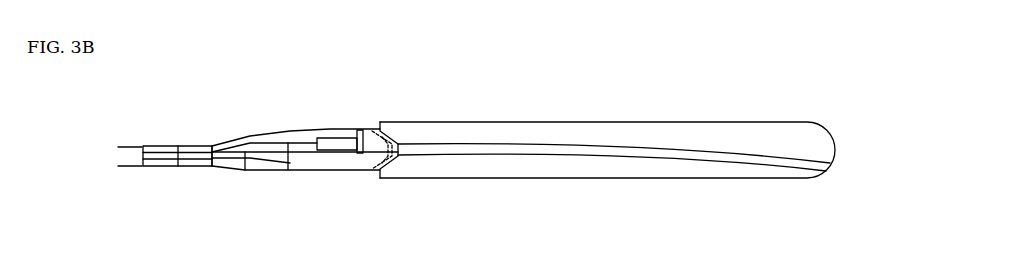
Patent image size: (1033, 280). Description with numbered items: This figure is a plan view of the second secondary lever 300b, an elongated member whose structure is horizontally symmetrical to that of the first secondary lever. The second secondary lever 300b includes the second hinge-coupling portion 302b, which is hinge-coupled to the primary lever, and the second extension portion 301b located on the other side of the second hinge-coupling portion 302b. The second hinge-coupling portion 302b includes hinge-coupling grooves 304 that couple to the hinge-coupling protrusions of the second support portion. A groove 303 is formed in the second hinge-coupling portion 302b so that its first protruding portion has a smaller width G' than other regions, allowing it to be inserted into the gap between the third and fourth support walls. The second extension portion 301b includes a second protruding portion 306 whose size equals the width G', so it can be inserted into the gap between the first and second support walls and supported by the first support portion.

The second secondary lever 300b is at (835, 182).
The second extension portion 301b is at (229, 180).
The second hinge-coupling portion 302b is at (380, 180).
The groove 303 is at (334, 138).
The hinge-coupling grooves 304 is at (360, 130).
The second protruding portion 306 is at (188, 151).
The width G' is at (121, 156).